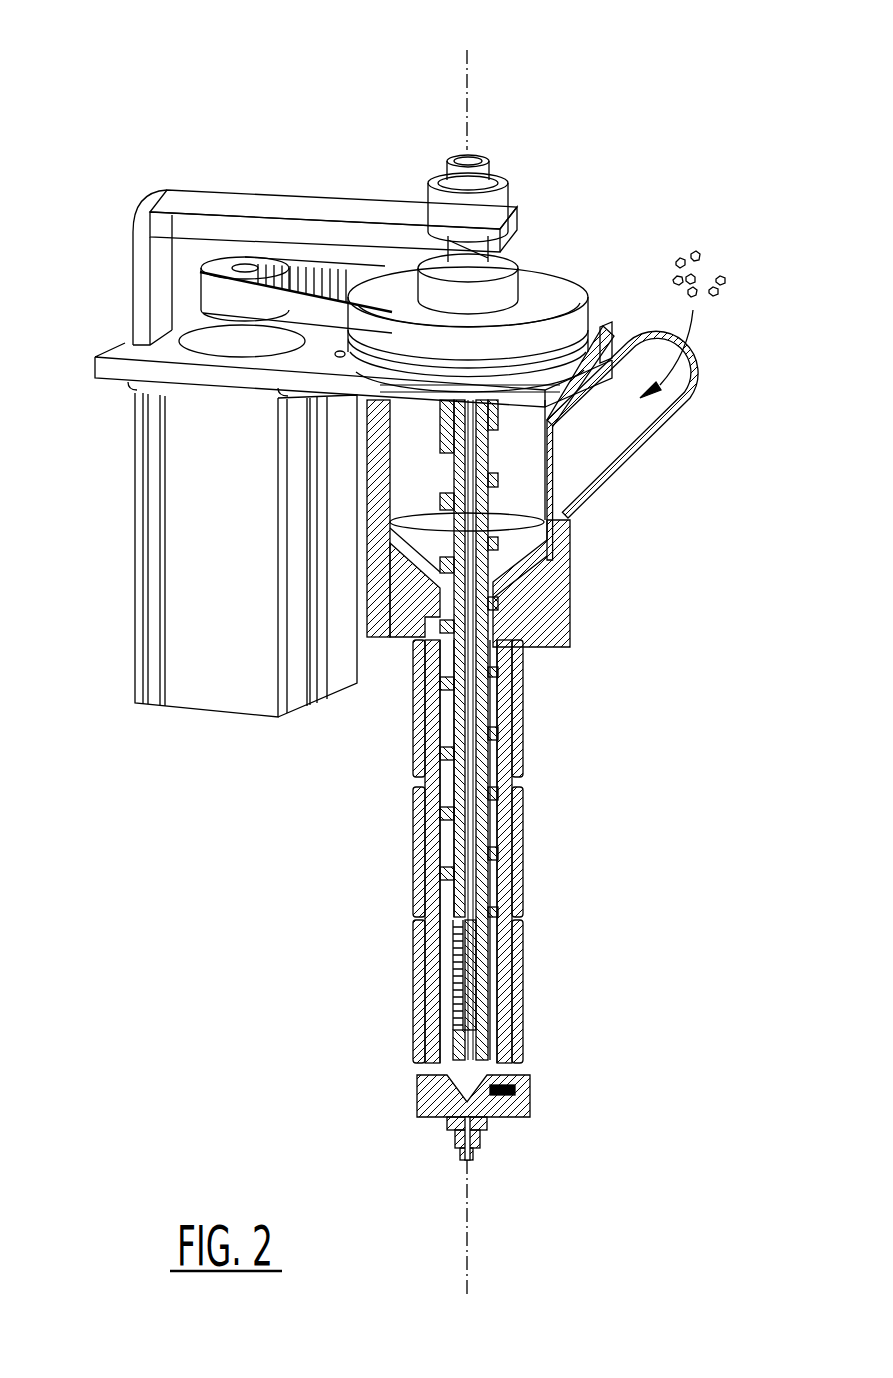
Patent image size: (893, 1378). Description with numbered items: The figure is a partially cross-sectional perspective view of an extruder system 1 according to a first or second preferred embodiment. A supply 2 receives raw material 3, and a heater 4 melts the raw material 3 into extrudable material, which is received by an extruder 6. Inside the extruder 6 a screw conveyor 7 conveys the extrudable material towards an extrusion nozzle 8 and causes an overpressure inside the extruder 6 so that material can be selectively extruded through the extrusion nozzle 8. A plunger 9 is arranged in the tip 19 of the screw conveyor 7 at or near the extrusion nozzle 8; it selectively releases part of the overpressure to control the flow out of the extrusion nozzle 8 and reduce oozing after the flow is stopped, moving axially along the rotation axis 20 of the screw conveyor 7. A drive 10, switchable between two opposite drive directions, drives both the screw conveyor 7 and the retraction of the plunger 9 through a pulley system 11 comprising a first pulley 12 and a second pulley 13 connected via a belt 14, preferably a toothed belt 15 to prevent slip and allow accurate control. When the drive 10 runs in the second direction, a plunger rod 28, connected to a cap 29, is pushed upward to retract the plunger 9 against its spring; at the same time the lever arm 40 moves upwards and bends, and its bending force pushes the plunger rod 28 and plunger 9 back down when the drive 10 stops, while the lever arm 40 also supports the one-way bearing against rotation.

The extruder system 1 is at (684, 90).
The supply 2 is at (615, 432).
The raw material 3 is at (702, 272).
The heater 4 is at (520, 690).
The extruder 6 is at (502, 748).
The screw conveyor 7 is at (487, 850).
The extrusion nozzle 8 is at (478, 1145).
The plunger 9 is at (463, 1057).
The drive 10 is at (180, 522).
The pulley system 11 is at (282, 213).
The first pulley 12 is at (228, 265).
The second pulley 13 is at (538, 277).
The belt 14 is at (398, 297).
The toothed belt 15 is at (588, 325).
The tip 19 is at (515, 1092).
The rotation axis 20 is at (475, 67).
The plunger rod 28 is at (460, 160).
The cap 29 is at (486, 160).
The lever arm 40 is at (360, 205).